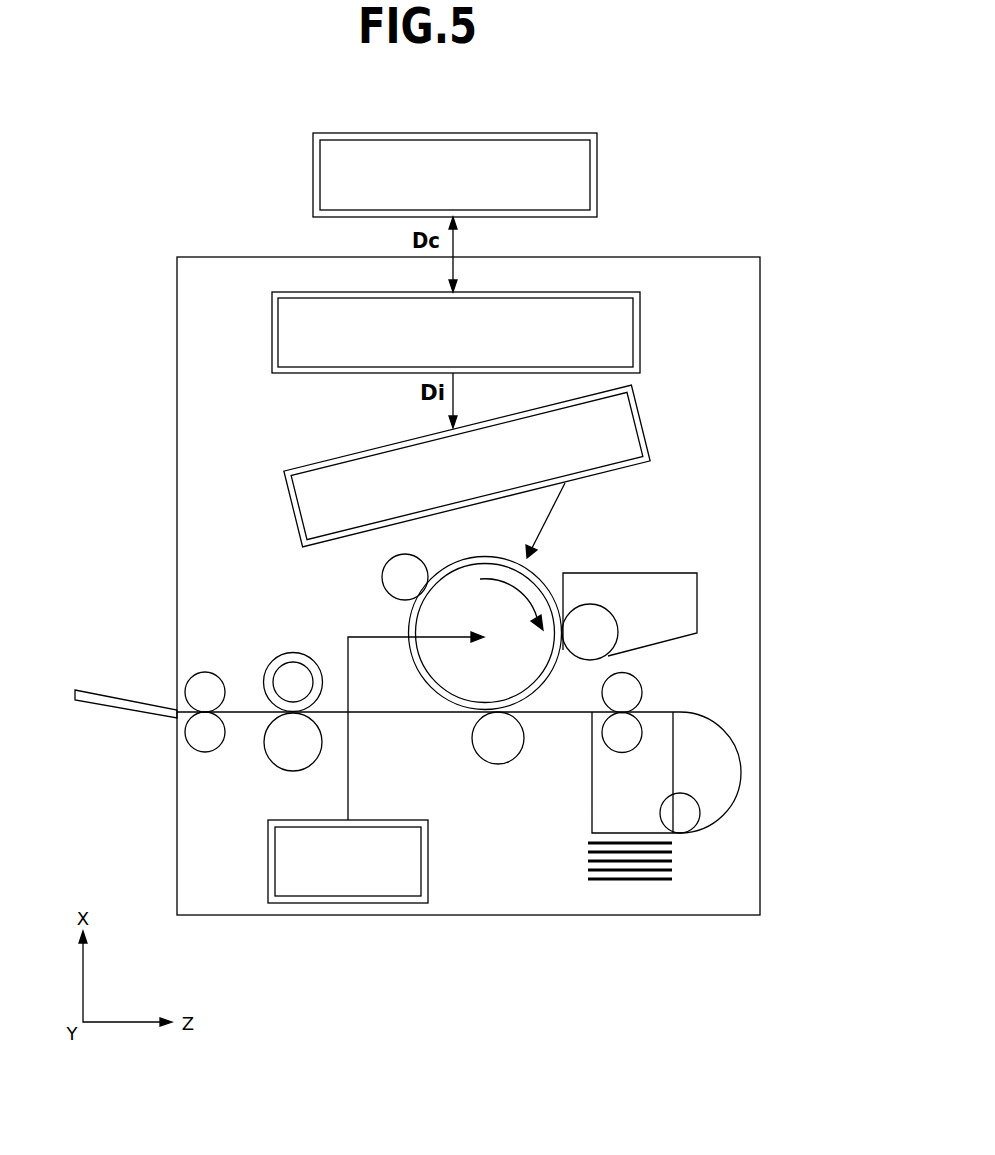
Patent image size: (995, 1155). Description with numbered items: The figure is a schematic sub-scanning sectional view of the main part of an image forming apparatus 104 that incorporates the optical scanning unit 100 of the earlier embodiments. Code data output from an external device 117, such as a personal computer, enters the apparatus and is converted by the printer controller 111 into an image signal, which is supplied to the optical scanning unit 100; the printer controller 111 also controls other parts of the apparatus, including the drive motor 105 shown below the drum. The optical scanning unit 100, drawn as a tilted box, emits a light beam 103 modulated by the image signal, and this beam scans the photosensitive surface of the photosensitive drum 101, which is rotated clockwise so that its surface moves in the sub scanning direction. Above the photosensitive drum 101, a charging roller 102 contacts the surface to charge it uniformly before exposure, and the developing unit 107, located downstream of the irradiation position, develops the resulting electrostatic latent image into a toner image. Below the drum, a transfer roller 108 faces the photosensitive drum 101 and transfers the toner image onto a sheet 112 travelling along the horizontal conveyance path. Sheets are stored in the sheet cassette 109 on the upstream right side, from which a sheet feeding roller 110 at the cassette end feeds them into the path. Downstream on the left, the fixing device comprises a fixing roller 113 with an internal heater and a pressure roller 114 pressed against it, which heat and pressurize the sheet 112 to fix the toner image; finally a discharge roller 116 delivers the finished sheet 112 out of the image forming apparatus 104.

The optical scanning unit 100 is at (648, 421).
The photosensitive drum 101 is at (433, 685).
The charging roller 102 is at (381, 580).
The light beam 103 is at (555, 512).
The image forming apparatus 104 is at (700, 257).
The motor 105 is at (268, 860).
The developing unit 107 is at (670, 573).
The transfer roller 108 is at (497, 762).
The sheet cassette 109 is at (590, 882).
The sheet feeding roller 110 is at (683, 803).
The printer controller 111 is at (640, 330).
The sheet 112 is at (400, 714).
The fixing roller 113 is at (293, 672).
The pressure roller 114 is at (278, 752).
The discharge roller 116 is at (212, 683).
The external device 117 is at (597, 172).